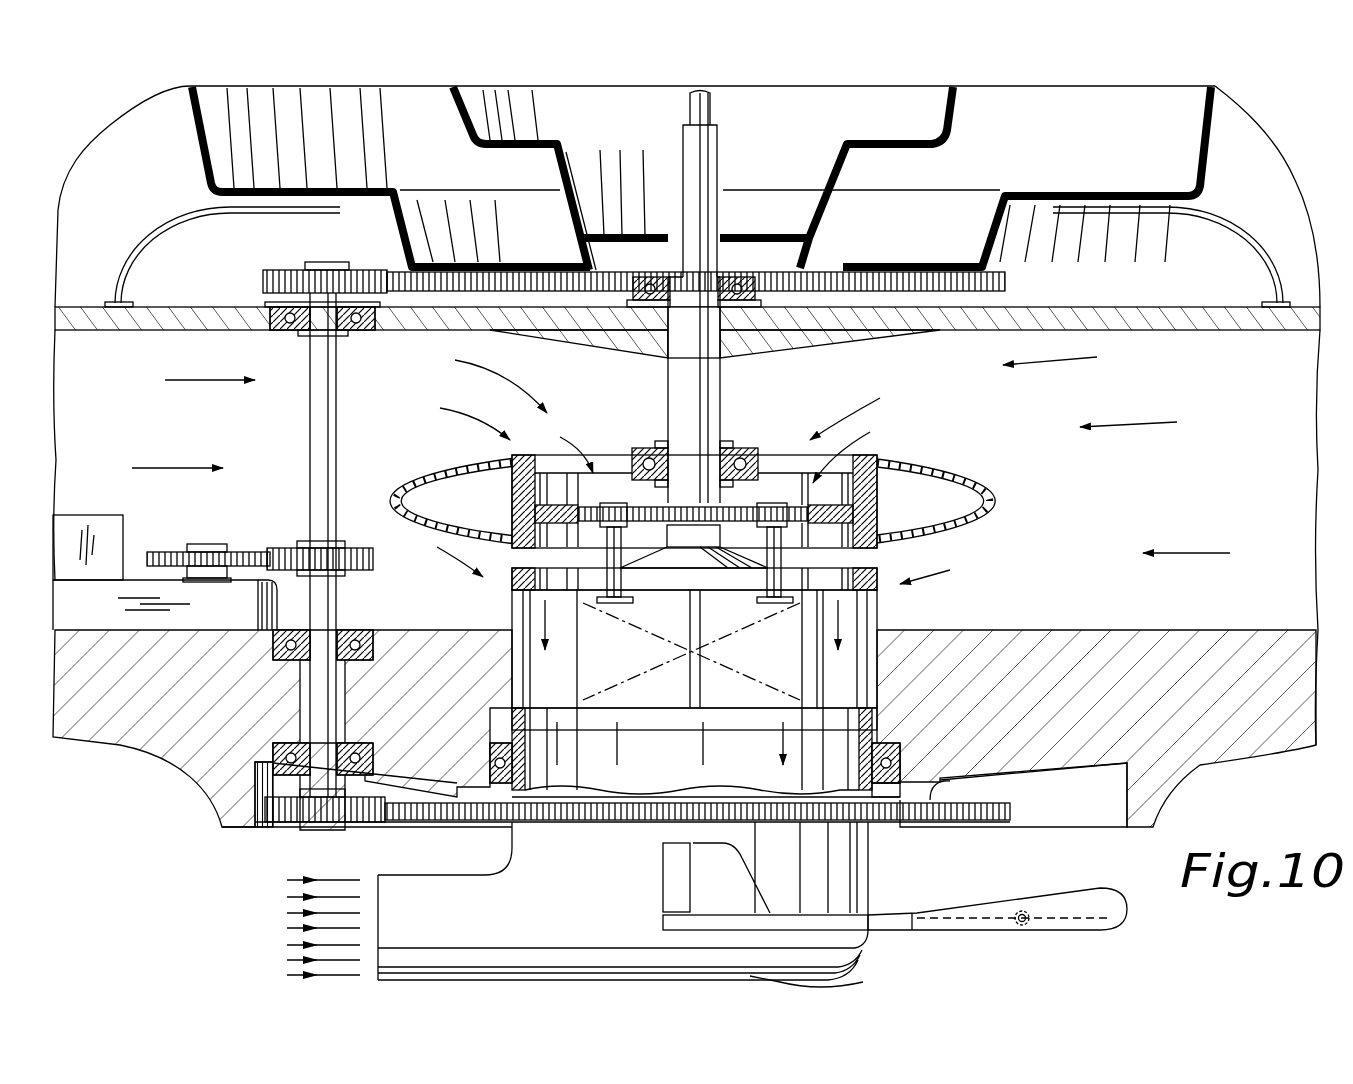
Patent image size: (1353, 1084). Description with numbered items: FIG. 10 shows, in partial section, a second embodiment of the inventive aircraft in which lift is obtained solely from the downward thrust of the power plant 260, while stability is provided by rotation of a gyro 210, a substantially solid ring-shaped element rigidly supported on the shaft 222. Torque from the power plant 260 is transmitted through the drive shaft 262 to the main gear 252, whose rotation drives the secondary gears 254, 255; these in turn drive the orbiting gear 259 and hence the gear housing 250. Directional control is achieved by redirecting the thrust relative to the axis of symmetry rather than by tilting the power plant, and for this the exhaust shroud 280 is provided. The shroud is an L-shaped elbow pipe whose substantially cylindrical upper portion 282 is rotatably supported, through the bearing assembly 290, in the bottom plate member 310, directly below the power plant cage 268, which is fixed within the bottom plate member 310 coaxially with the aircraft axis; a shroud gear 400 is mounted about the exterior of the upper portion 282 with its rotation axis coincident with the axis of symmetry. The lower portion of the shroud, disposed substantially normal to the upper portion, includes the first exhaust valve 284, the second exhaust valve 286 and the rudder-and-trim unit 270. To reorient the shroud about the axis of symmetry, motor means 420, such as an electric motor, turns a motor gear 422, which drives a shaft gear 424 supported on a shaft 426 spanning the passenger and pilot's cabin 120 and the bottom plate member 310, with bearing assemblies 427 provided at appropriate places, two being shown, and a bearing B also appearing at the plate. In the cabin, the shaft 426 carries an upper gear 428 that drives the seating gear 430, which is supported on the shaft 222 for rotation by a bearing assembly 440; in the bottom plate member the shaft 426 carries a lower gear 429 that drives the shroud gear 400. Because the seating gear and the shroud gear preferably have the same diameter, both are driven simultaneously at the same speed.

The passenger and pilot's cabin 120 is at (200, 297).
The gyro 210 is at (995, 470).
The shaft 222 is at (697, 395).
The gear housing 250 is at (607, 442).
The main gear 252 is at (723, 505).
The secondary gear 254 is at (600, 495).
The secondary gear 255 is at (796, 495).
The orbiting gear 259 is at (806, 502).
The power plant 260 is at (636, 664).
The drive shaft 262 is at (688, 535).
The power plant cage 268 is at (503, 613).
The rudder-and-trim unit 270 is at (982, 940).
The exhaust shroud 280 is at (567, 912).
The upper portion 282 is at (808, 797).
The first exhaust valve 284 is at (821, 980).
The second exhaust valve 286 is at (377, 886).
The bearing assembly 290 is at (900, 762).
The bottom plate member 310 is at (150, 717).
The shroud gear 400 is at (633, 822).
The motor means 420 is at (98, 617).
The motor gear 422 is at (161, 551).
The shaft gear 424 is at (348, 549).
The shaft 426 is at (320, 413).
The bearing assembly 427 is at (372, 745).
The upper gear 428 is at (283, 271).
The lower gear 429 is at (273, 828).
The seating gear 430 is at (397, 270).
The bearing assembly 440 is at (737, 288).
The bearing B is at (292, 332).